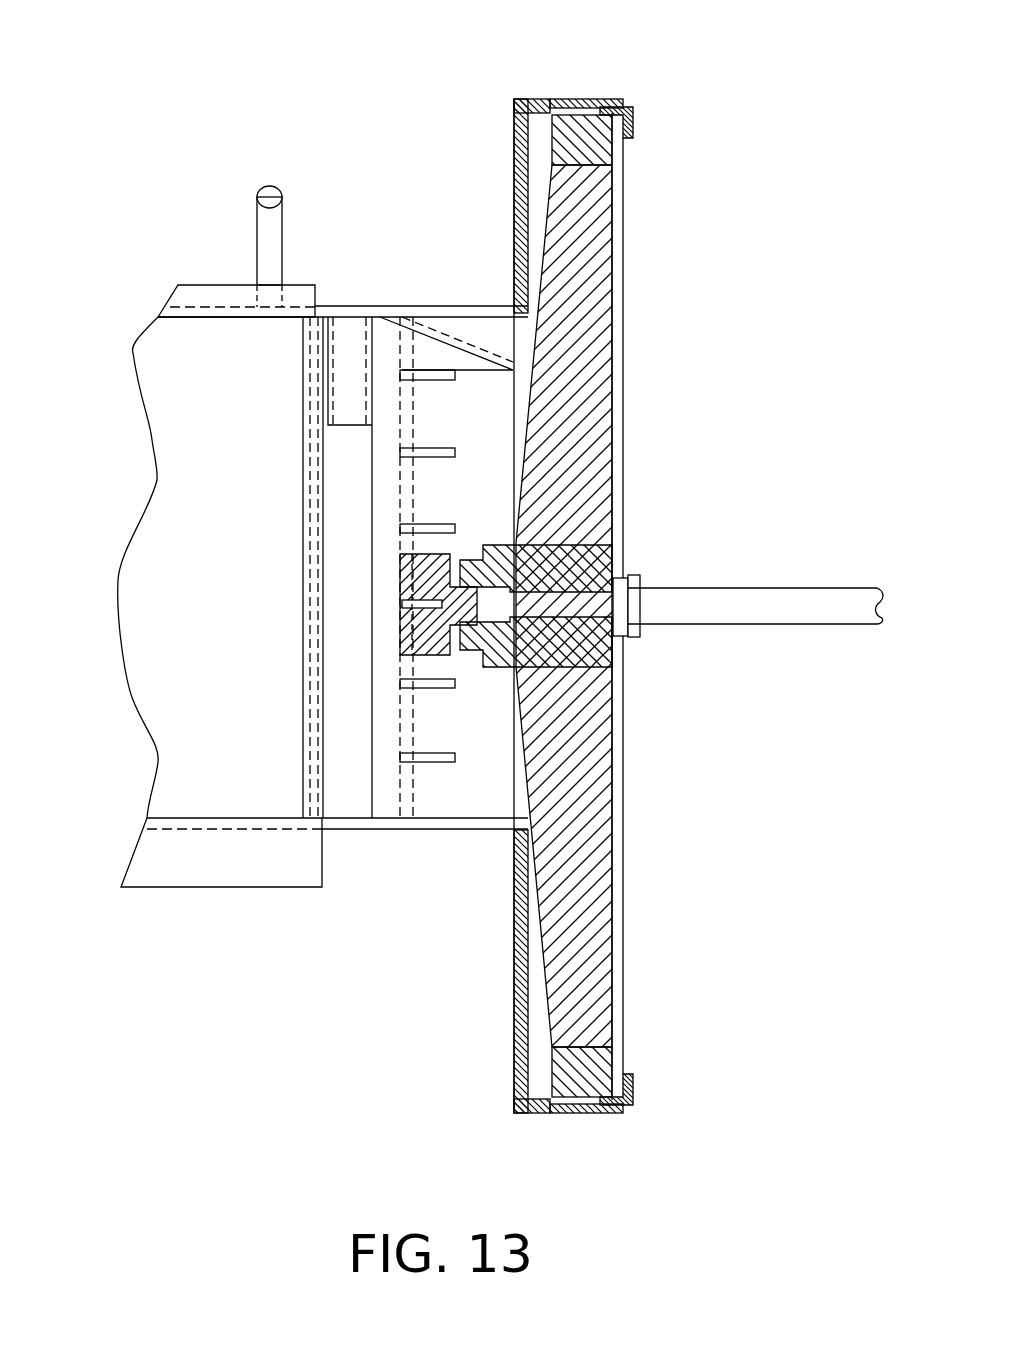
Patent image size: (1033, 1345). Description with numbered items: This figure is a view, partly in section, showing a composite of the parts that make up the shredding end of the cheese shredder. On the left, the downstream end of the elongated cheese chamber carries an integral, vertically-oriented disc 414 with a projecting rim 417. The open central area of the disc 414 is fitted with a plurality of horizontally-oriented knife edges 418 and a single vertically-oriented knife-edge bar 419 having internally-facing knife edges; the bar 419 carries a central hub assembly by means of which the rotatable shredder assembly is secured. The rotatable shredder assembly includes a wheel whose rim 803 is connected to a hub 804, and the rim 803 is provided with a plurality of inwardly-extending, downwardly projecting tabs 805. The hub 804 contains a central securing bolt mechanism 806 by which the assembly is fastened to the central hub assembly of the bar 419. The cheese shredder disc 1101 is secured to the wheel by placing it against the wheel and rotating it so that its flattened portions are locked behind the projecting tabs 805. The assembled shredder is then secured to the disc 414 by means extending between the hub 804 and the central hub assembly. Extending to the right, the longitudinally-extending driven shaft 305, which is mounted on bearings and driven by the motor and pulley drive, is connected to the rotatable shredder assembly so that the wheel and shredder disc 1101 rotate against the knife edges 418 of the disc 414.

The driven shaft 305 is at (762, 590).
The disc 414 is at (513, 180).
The projecting rim 417 is at (577, 100).
The horizontally-oriented knife edges 418 is at (435, 375).
The vertically-oriented knife-edge bar 419 is at (412, 513).
The rim 803 is at (588, 145).
The hub 804 is at (583, 776).
The projecting tabs 805 is at (635, 122).
The central securing bolt mechanism 806 is at (585, 607).
The cheese shredder disc 1101 is at (625, 316).